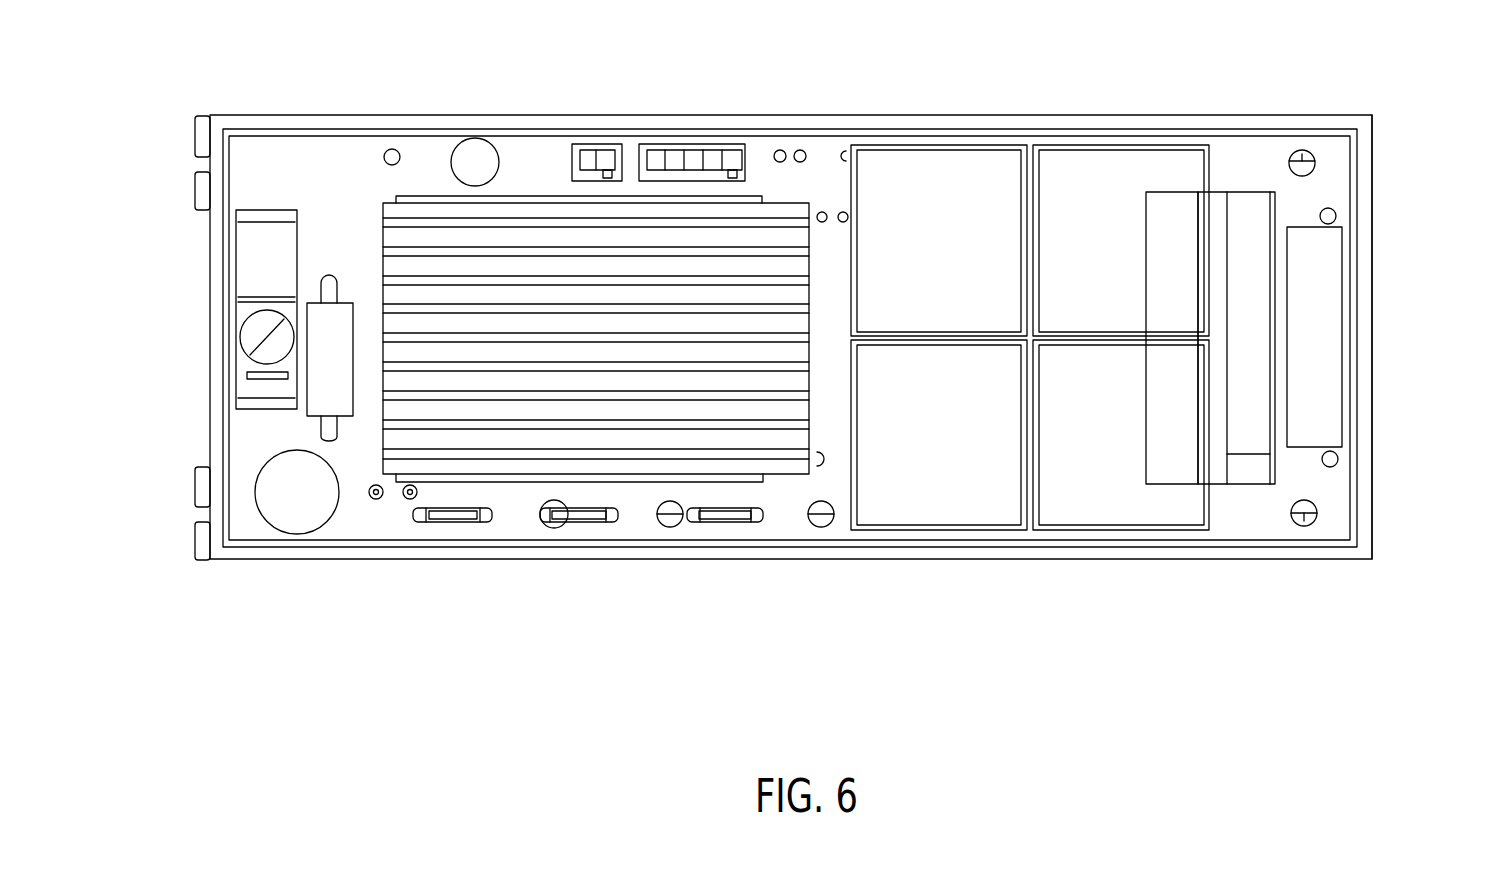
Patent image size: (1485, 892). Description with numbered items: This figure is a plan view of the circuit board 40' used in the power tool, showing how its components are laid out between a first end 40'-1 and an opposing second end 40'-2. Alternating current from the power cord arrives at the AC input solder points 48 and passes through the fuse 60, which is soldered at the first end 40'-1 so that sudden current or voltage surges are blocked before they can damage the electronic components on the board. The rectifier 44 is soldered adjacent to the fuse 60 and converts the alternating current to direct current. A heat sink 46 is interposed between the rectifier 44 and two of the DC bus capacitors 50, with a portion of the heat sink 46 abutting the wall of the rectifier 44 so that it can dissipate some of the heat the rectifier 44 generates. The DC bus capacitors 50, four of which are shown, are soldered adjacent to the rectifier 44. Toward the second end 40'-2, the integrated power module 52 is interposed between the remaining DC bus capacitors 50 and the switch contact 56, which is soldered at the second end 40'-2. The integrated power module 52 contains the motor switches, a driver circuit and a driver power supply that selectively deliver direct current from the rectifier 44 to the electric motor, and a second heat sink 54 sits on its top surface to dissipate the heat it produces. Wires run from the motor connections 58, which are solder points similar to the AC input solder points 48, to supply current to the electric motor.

The circuit board 40' is at (791, 310).
The first end 40'-1 is at (1423, 337).
The second end 40'-2 is at (153, 338).
The rectifier 44 is at (1248, 218).
The heat sink 46 is at (1178, 215).
The AC input solder points 48 is at (1302, 163).
The DC bus capacitors 50 is at (955, 190).
The integrated power module 52 is at (565, 195).
The heat sink 54 is at (716, 237).
The switch contact 56 is at (278, 237).
The motor connections 58 is at (453, 522).
The fuse 60 is at (1318, 363).